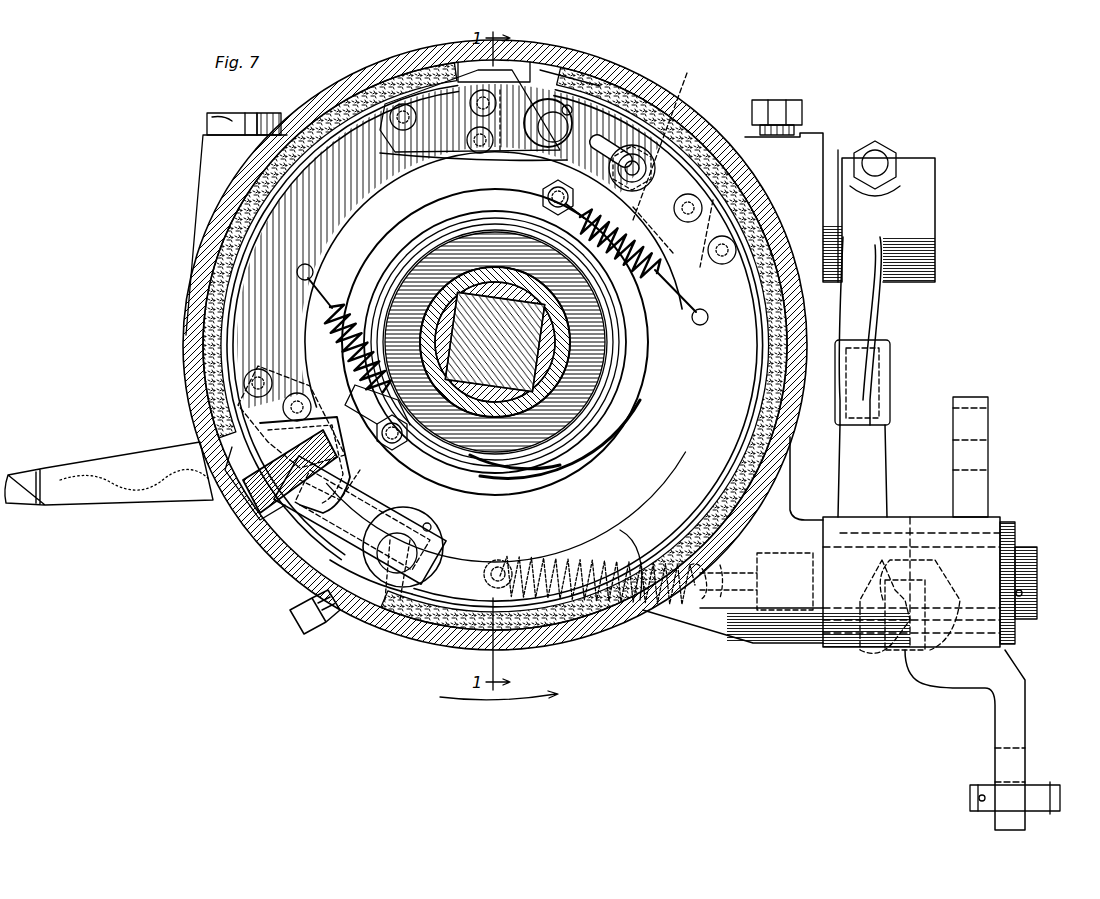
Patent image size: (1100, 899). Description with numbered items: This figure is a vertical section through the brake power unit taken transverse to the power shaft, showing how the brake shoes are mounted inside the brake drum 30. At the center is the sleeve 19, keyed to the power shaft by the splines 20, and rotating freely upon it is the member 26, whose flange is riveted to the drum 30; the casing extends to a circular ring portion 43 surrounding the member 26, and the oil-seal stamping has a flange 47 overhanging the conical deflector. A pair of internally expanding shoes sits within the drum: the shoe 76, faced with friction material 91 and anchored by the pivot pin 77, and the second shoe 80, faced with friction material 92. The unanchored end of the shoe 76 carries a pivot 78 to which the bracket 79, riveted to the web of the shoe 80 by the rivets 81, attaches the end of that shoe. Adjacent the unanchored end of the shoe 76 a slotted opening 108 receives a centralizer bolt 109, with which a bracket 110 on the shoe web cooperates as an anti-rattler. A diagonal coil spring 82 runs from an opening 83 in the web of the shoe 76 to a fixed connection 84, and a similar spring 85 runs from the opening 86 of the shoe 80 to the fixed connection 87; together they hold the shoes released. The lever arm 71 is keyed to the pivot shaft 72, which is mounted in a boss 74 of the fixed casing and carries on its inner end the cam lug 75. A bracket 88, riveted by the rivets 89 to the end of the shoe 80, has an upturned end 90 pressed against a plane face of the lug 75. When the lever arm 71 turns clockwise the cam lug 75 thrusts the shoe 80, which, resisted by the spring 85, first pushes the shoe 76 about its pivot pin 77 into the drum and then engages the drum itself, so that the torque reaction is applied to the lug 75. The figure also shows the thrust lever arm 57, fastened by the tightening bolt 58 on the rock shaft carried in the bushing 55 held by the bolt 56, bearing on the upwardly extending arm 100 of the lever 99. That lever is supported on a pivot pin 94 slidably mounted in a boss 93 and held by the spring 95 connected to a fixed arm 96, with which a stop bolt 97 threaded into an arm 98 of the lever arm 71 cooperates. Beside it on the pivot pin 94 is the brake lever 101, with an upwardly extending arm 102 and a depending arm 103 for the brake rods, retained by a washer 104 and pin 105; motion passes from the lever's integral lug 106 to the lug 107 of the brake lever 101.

The sleeve 19 is at (455, 285).
The splines 20 is at (430, 300).
The member 26 is at (490, 272).
The brake drum 30 is at (650, 140).
The circular ring portion 43 is at (425, 275).
The flange 47 is at (468, 268).
The bushing 55 is at (832, 145).
The bolt 56 is at (778, 104).
The lever arm 57 is at (878, 325).
The tightening bolt 58 is at (880, 160).
The lever arm 71 is at (160, 490).
The pivot shaft 72 is at (318, 520).
The boss 74 is at (385, 418).
The cam lug 75 is at (300, 520).
The shoe 76 is at (635, 570).
The pivot pin 77 is at (398, 590).
The pivot 78 is at (550, 120).
The bracket 79 is at (505, 162).
The second shoe 80 is at (385, 190).
The rivets 81 is at (416, 118).
The diagonal coil spring 82 is at (640, 265).
The opening 83 is at (703, 310).
The fixed connection 84 is at (556, 212).
The spring 85 is at (345, 325).
The opening 86 is at (305, 264).
The fixed connection 87 is at (420, 448).
The bracket 88 is at (298, 392).
The rivets 89 is at (258, 375).
The upturned end 90 is at (245, 490).
The friction material 91 is at (590, 600).
The friction material 92 is at (225, 300).
The boss 93 is at (805, 636).
The pivot pin 94 is at (1033, 560).
The spring 95 is at (698, 600).
The fixed arm 96 is at (425, 620).
The stop bolt 97 is at (318, 630).
The arm 98 is at (300, 578).
The lever 99 is at (858, 628).
The upwardly extending arm 100 is at (880, 465).
The brake lever 101 is at (960, 555).
The upwardly extending arm 102 is at (975, 488).
The depending arm 103 is at (1000, 742).
The washer 104 is at (1010, 540).
The pin 105 is at (1023, 592).
The lug 106 is at (935, 585).
The lug 107 is at (900, 640).
The slotted opening 108 is at (603, 140).
The centralizer bolt 109 is at (640, 160).
The bracket 110 is at (680, 185).